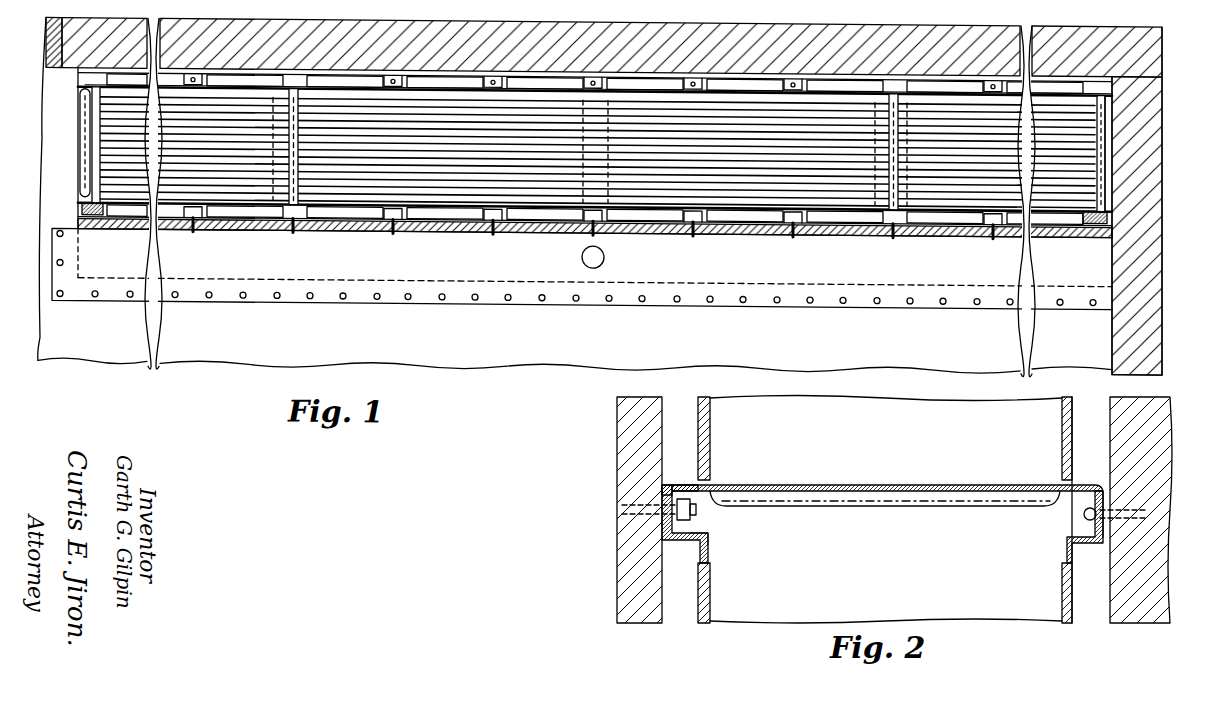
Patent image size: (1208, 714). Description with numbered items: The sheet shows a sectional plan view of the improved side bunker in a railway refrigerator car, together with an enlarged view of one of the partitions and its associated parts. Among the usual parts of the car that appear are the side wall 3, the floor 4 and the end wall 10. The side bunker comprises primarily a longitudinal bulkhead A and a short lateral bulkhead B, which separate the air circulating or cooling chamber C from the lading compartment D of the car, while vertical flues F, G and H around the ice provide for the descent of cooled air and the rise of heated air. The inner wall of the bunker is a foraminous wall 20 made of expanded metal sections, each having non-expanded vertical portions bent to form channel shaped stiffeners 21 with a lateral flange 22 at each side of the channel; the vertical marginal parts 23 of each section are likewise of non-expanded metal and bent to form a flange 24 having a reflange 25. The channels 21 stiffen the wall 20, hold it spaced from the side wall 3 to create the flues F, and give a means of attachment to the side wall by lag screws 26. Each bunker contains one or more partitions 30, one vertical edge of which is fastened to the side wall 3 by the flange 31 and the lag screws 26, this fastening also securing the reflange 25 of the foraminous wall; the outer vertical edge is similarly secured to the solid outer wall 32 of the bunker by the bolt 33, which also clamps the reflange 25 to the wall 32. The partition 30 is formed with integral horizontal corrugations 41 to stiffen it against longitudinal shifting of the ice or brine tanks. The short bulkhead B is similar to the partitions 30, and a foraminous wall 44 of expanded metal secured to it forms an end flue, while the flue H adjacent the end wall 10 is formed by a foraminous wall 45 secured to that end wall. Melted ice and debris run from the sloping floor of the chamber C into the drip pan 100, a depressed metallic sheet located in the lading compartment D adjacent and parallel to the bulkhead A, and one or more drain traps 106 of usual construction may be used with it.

In FIG. 1, the side wall 3 is at (665, 31).
In FIG. 2, the side wall 3 is at (1145, 613).
In FIG. 1, the floor 4 is at (250, 353).
In FIG. 1, the end wall 10 is at (1150, 258).
In FIG. 1, the foraminous wall 20 is at (740, 83).
In FIG. 1, the vertical flue F is at (533, 73).
In FIG. 1, the air circulating chamber C is at (475, 149).
In FIG. 1, the vertical flue G is at (530, 207).
In FIG. 1, the partition 30 is at (885, 197).
In FIG. 2, the partition 30 is at (810, 487).
In FIG. 1, the short lateral bulkhead B is at (90, 131).
In FIG. 1, the foraminous wall 44 is at (97, 110).
In FIG. 1, the foraminous wall 45 is at (1102, 115).
In FIG. 1, the vertical flue H is at (1105, 152).
In FIG. 1, the lading compartment D is at (582, 288).
In FIG. 1, the drip pan 100 is at (595, 266).
In FIG. 1, the longitudinal bulkhead A is at (670, 256).
In FIG. 1, the drain trap 106 is at (581, 252).
In FIG. 2, the outer wall 32 is at (632, 570).
In FIG. 2, the vertical marginal part 23 is at (712, 478).
In FIG. 2, the lateral flange 22 is at (712, 553).
In FIG. 2, the flange 24 is at (683, 485).
In FIG. 2, the reflange 25 is at (662, 487).
In FIG. 2, the channel shaped stiffener 21 is at (700, 536).
In FIG. 2, the bolt 33 is at (626, 513).
In FIG. 2, the horizontal corrugation 41 is at (860, 505).
In FIG. 2, the flange 31 is at (1092, 529).
In FIG. 2, the lag screw 26 is at (1150, 510).